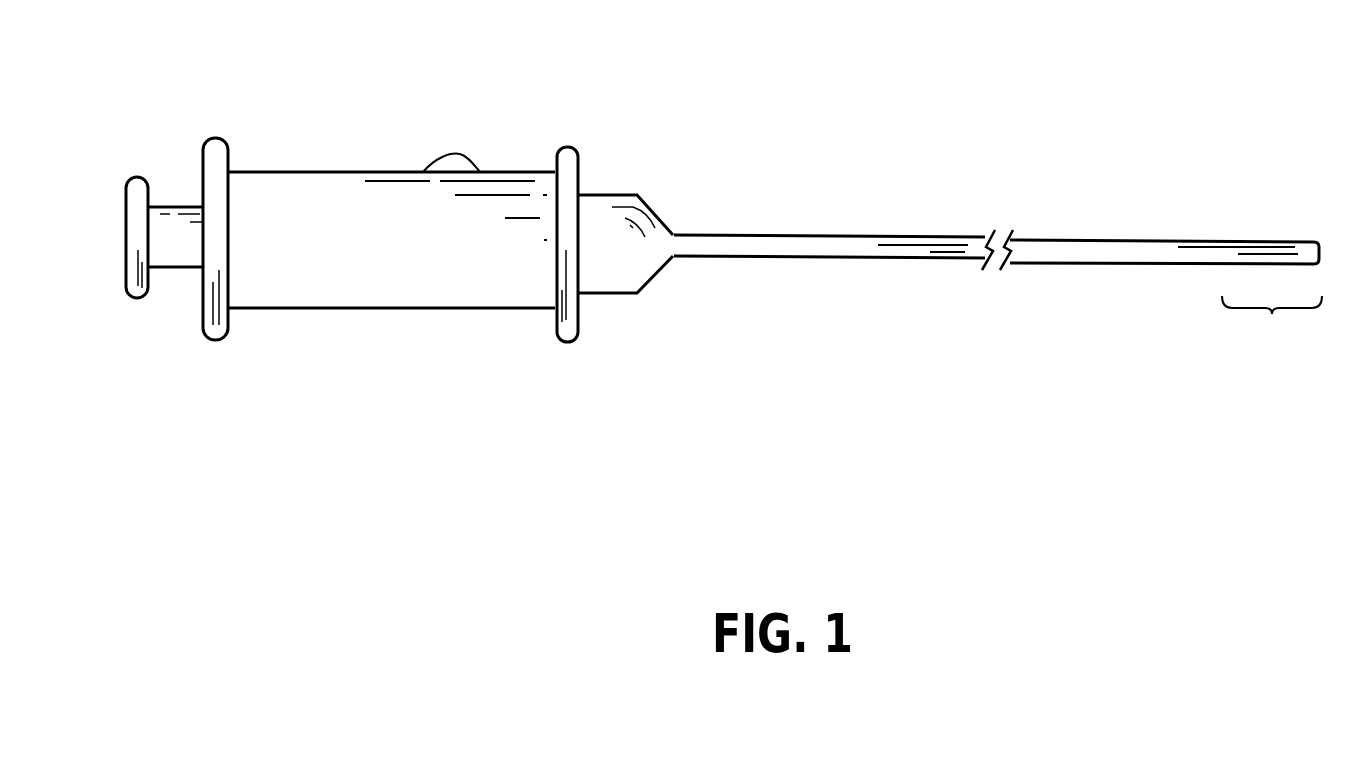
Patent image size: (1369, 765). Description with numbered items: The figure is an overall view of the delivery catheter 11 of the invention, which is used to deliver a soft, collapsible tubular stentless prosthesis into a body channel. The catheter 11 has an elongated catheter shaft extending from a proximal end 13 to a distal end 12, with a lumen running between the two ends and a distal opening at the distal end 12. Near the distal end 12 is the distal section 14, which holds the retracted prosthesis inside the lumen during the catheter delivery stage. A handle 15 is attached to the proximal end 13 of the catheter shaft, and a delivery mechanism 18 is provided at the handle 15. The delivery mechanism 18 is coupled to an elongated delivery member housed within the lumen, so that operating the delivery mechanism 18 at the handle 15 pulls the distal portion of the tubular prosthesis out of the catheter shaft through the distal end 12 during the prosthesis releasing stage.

The catheter 11 is at (820, 213).
The distal end 12 is at (1324, 239).
The proximal end 13 is at (671, 224).
The distal section 14 is at (1272, 326).
The handle 15 is at (282, 170).
The delivery mechanism 18 is at (187, 203).